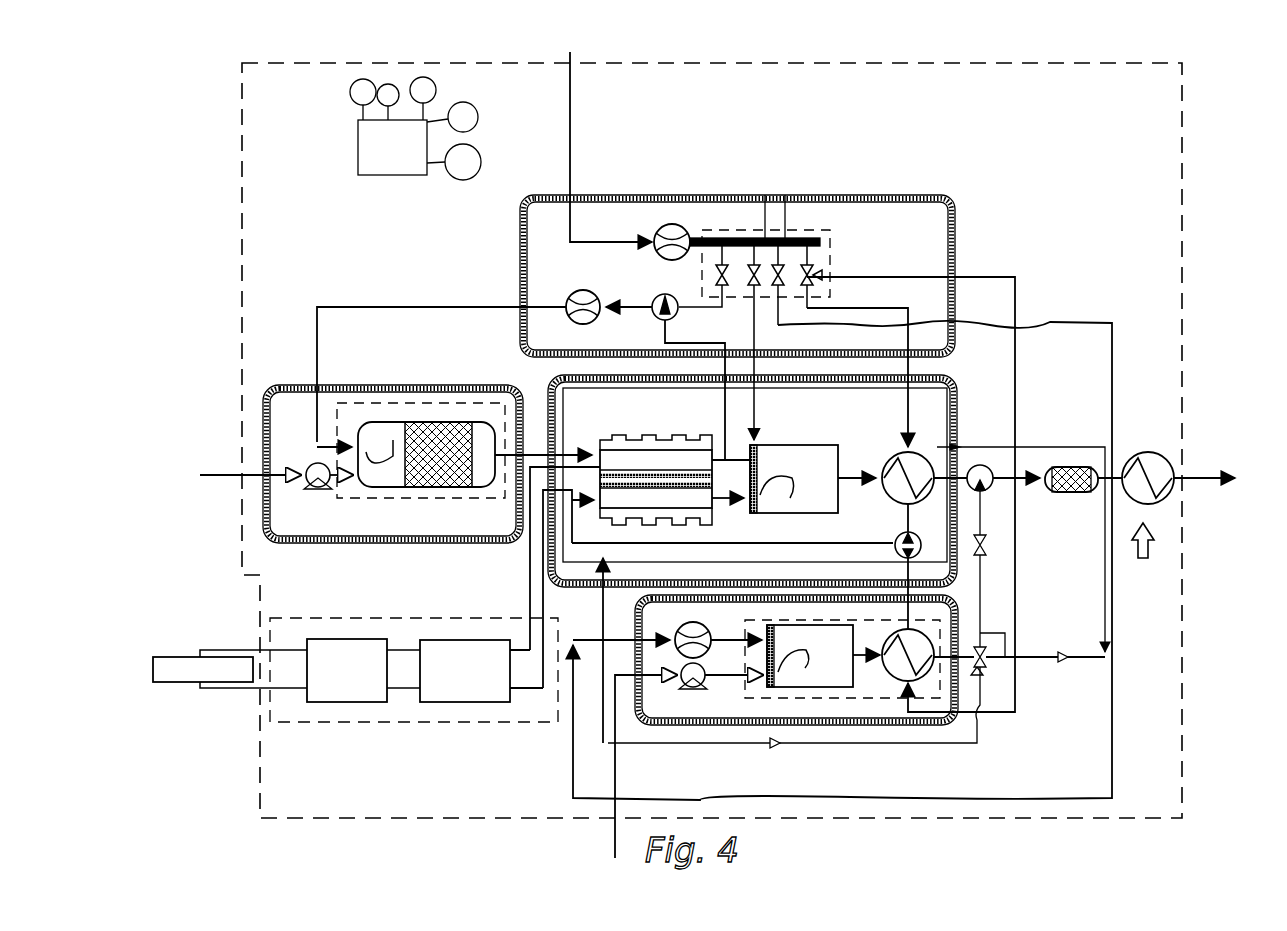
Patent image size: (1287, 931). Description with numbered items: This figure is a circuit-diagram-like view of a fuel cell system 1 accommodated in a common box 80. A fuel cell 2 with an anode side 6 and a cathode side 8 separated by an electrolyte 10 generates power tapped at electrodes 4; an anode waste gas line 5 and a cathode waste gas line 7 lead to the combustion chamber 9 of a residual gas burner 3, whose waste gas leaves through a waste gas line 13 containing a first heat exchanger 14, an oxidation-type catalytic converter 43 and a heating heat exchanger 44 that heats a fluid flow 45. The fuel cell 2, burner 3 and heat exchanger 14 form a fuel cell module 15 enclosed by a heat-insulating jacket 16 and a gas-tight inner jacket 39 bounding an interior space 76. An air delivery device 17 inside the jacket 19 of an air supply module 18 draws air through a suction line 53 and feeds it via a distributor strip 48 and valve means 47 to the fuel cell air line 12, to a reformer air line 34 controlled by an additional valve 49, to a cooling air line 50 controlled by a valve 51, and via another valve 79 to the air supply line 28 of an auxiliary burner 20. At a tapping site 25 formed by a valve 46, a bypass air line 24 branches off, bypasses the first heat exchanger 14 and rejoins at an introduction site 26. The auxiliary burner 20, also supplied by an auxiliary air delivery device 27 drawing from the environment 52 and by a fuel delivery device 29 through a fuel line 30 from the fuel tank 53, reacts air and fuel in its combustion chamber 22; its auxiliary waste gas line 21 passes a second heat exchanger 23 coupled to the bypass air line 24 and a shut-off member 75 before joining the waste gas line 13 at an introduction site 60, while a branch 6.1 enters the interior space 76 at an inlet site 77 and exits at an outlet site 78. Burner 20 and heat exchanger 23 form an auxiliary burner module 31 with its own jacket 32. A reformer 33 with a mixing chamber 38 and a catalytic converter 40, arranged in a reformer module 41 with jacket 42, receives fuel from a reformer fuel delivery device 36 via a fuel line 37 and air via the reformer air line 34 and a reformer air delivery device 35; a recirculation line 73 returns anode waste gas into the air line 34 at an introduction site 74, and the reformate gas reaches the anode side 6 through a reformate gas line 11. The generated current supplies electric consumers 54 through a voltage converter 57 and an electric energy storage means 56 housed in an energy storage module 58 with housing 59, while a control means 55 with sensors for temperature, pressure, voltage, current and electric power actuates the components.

The fuel cell system 1 is at (1040, 195).
The fuel cell 2 is at (627, 445).
The residual gas burner 3 is at (794, 456).
The electrodes 4 is at (598, 496).
The anode waste gas line 5 is at (738, 457).
The anode side 6 is at (656, 460).
The cathode waste gas line 7 is at (740, 498).
The cathode side 8 is at (656, 498).
The combustion chamber 9 is at (787, 484).
The electrolyte 10 is at (680, 472).
The reformate gas line 11 is at (582, 455).
The fuel cell air line 12 is at (900, 332).
The burner waste gas line 13 is at (858, 460).
The first heat exchanger 14 is at (888, 452).
The fuel cell module 15 is at (968, 372).
The heat-insulating jacket 16 is at (962, 398).
The air delivery device 17 is at (690, 236).
The air supply module 18 is at (896, 193).
The jacket 19 is at (957, 242).
The auxiliary burner 20 is at (810, 727).
The auxiliary burner waste gas line 21 is at (862, 655).
The combustion chamber 22 is at (810, 656).
The second heat exchanger 23 is at (892, 680).
The bypass air line 24 is at (910, 618).
The tapping site 25 is at (815, 272).
The introduction site 26 is at (896, 538).
The auxiliary air delivery device 27 is at (704, 630).
The air supply line 28 is at (1093, 323).
The fuel delivery device 29 is at (694, 690).
The fuel line 30 is at (750, 690).
The auxiliary burner module 31 is at (893, 727).
The heat-insulating jacket 32 is at (932, 700).
The reformer 33 is at (390, 492).
The reformer air line 34 is at (420, 305).
The reformer air delivery device 35 is at (574, 293).
The reformer fuel delivery device 36 is at (326, 490).
The fuel line 37 is at (283, 472).
The mixing chamber 38 is at (379, 446).
The inner jacket 39 is at (948, 425).
The catalytic converter 40 is at (472, 470).
The reformer module 41 is at (290, 383).
The heat-insulating jacket 42 is at (378, 403).
The oxidation-type catalytic converter 43 is at (1073, 466).
The heating heat exchanger 44 is at (1145, 452).
The fluid flow 45 is at (1150, 550).
The valve 46 is at (832, 297).
The valve means 47 is at (822, 229).
The distributor strip 48 is at (785, 195).
The additional valve 49 is at (714, 278).
The cooling air line 50 is at (757, 445).
The valve 51 is at (752, 288).
The environment 52 is at (607, 129).
The fuel tank 53 is at (645, 242).
The electric consumer 54 is at (230, 669).
The control means 55 is at (415, 128).
The electric energy storage means 56 is at (363, 670).
The voltage converter 57 is at (481, 671).
The energy storage module 58 is at (388, 725).
The housing 59 is at (435, 725).
The introduction site 60 is at (990, 490).
The branch 6.1 is at (1066, 668).
The recirculation line 73 is at (697, 300).
The introduction site 74 is at (669, 377).
The shut-off member 75 is at (990, 545).
The interior space 76 is at (815, 443).
The inlet site 77 is at (598, 560).
The outlet site 78 is at (930, 432).
The valve 79 is at (765, 195).
The box 80 is at (240, 234).